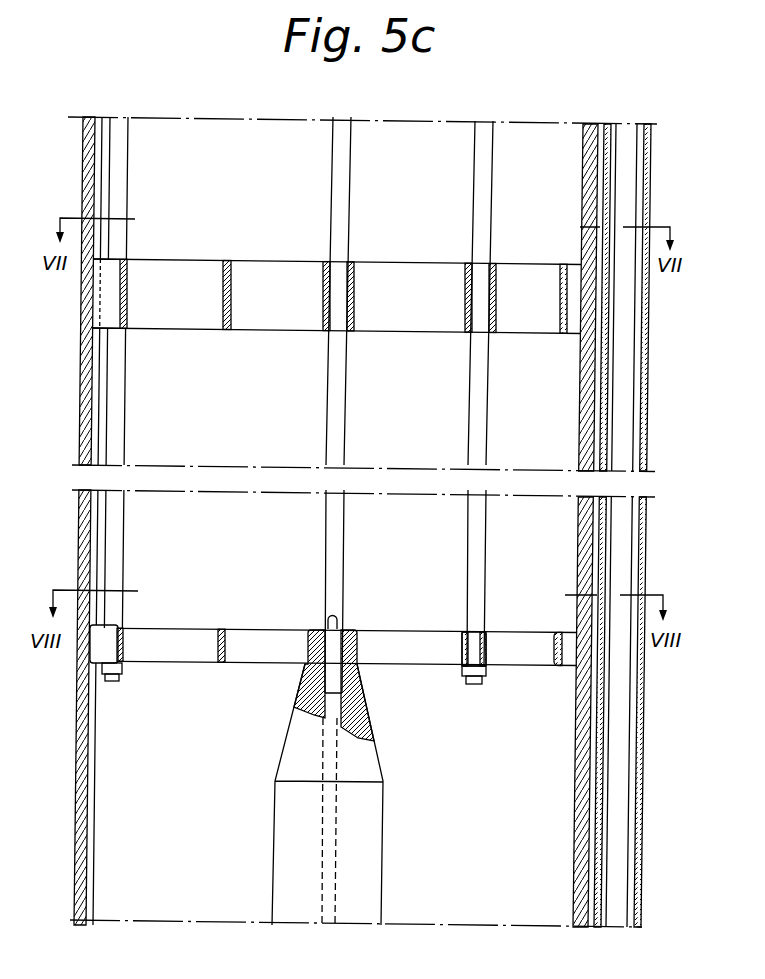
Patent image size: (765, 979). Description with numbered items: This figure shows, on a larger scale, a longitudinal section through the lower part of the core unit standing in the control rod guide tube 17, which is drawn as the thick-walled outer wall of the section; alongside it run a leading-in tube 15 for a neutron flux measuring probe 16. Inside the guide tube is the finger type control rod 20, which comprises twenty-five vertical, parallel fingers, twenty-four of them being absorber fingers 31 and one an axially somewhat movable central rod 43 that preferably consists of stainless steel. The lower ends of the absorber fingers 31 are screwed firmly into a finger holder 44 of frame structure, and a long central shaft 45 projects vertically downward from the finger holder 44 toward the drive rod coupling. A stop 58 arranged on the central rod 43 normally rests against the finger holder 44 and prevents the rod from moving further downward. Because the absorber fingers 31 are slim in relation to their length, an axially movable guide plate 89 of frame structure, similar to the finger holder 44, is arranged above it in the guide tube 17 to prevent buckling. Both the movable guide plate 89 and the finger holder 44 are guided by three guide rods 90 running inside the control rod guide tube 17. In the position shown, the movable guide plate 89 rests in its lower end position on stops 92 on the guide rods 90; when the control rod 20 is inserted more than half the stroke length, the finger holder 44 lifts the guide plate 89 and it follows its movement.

The leading-in tube 15 is at (598, 878).
The neutron flux measuring probe 16 is at (618, 840).
The control rod guide tube 17 is at (578, 821).
The finger type control rod 20 is at (533, 557).
The absorber finger 31 is at (488, 411).
The central rod 43 is at (339, 556).
The finger holder 44 is at (430, 657).
The central shaft 45 is at (372, 840).
The stop 58 is at (345, 628).
The movable guide plate 89 is at (512, 271).
The guide rod 90 is at (93, 395).
The stop 92 is at (93, 323).